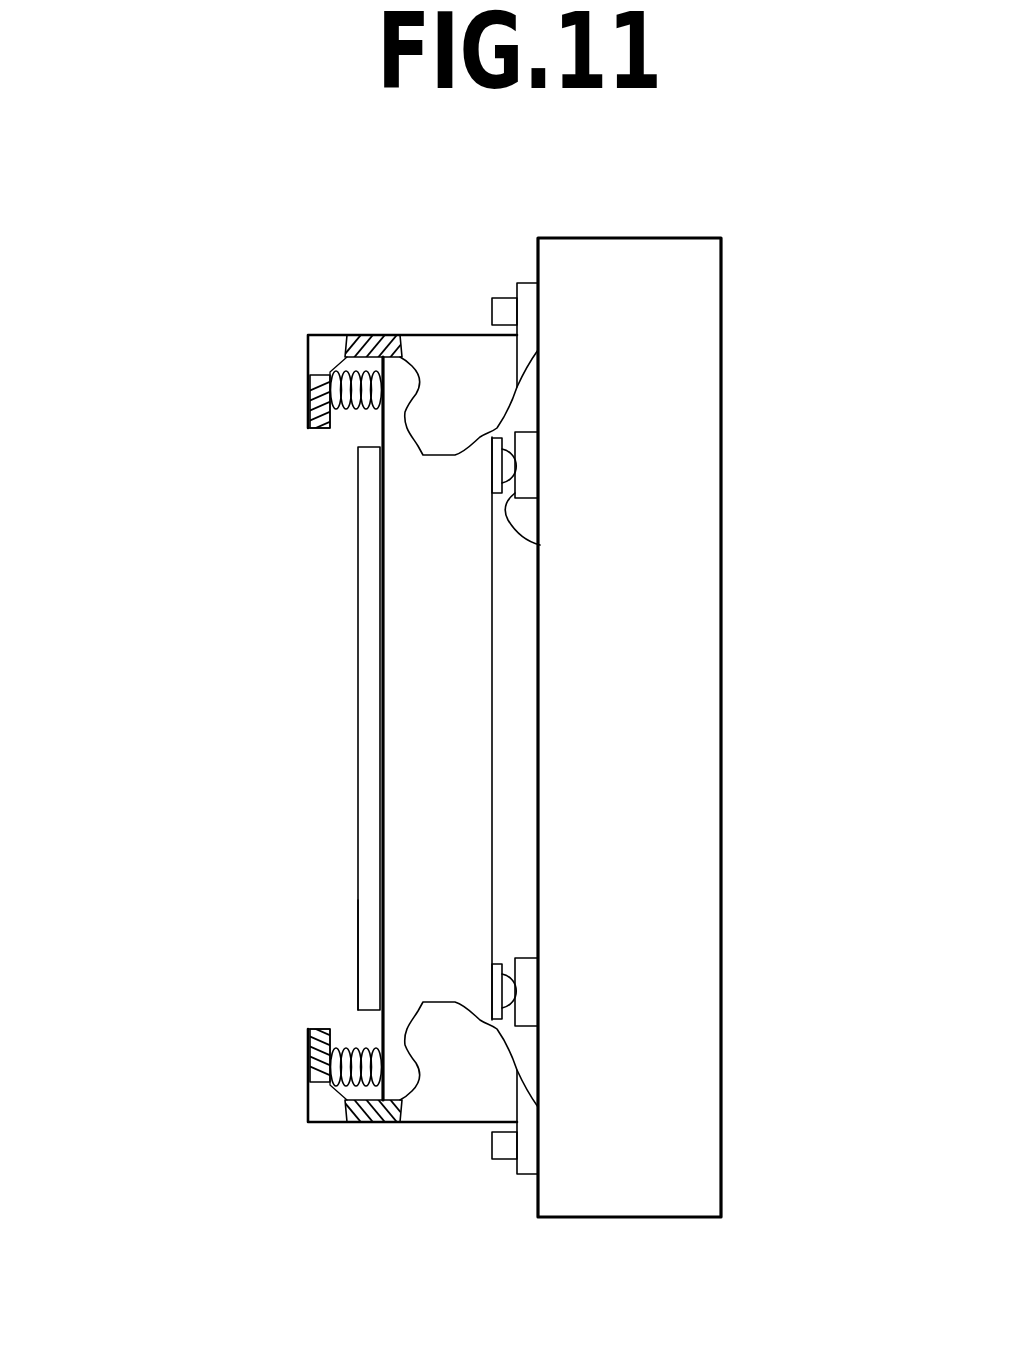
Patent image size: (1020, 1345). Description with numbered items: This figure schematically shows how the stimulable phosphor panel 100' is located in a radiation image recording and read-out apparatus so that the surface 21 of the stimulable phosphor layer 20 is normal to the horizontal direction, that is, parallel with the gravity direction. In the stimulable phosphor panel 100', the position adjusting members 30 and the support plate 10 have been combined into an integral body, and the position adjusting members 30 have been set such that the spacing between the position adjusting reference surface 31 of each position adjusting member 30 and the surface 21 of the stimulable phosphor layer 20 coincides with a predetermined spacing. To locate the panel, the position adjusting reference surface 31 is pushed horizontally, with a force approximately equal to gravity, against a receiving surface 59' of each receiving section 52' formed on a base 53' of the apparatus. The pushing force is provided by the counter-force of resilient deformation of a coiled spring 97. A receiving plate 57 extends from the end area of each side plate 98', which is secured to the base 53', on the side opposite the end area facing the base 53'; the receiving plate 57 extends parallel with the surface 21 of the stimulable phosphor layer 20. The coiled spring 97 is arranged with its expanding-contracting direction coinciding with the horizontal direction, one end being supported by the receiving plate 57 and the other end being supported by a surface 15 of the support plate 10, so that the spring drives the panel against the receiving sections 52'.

The base 53' is at (617, 682).
The side plate 98' is at (423, 348).
The receiving plate 57 is at (308, 398).
The coiled spring 97 is at (346, 421).
The surface of the support plate 15 is at (383, 433).
The receiving section 52' is at (558, 452).
The receiving surface 59' is at (560, 543).
The support plate 10 is at (400, 720).
The stimulable phosphor layer 20 is at (372, 810).
The surface of the stimulable phosphor layer 21 is at (358, 928).
The stimulable phosphor panel 100' is at (317, 1023).
The position adjusting member 30 is at (508, 953).
The position adjusting reference surface 31 is at (515, 1000).